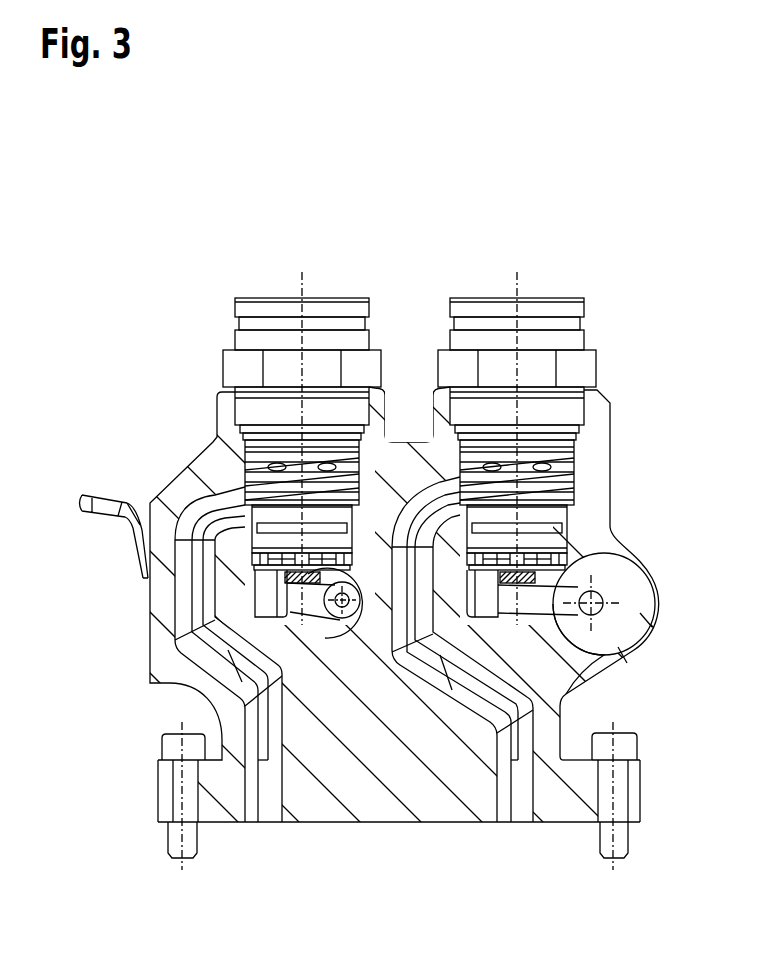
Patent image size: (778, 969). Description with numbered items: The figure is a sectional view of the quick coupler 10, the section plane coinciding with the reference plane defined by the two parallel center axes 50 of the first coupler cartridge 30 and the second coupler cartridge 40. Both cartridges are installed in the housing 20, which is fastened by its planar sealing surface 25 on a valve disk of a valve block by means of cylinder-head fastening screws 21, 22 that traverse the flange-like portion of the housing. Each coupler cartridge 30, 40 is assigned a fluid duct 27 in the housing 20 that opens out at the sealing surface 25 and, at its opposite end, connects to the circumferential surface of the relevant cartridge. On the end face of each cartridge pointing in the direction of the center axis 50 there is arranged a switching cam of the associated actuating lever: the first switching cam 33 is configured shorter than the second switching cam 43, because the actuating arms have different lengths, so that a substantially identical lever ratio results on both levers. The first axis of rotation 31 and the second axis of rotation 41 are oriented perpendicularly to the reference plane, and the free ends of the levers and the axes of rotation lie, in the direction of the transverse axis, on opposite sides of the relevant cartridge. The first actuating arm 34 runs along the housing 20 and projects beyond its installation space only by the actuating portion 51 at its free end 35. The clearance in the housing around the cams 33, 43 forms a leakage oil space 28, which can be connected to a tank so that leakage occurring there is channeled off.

The quick coupler 10 is at (435, 494).
The housing 20 is at (590, 523).
The fastening screw 21 is at (173, 840).
The fastening screw 22 is at (623, 840).
The sealing surface 25 is at (563, 823).
The fluid duct 27 is at (203, 667).
The leakage oil space 28 is at (519, 735).
The first coupler cartridge 30 is at (288, 310).
The first axis of rotation 31 is at (348, 610).
The first switching cam 33 is at (302, 617).
The first actuating arm 34 is at (138, 548).
The free end 35 is at (90, 514).
The second coupler cartridge 40 is at (540, 310).
The second axis of rotation 41 is at (603, 620).
The second switching cam 43 is at (590, 667).
The center axis 50 is at (304, 286).
The actuating portion 51 is at (85, 541).